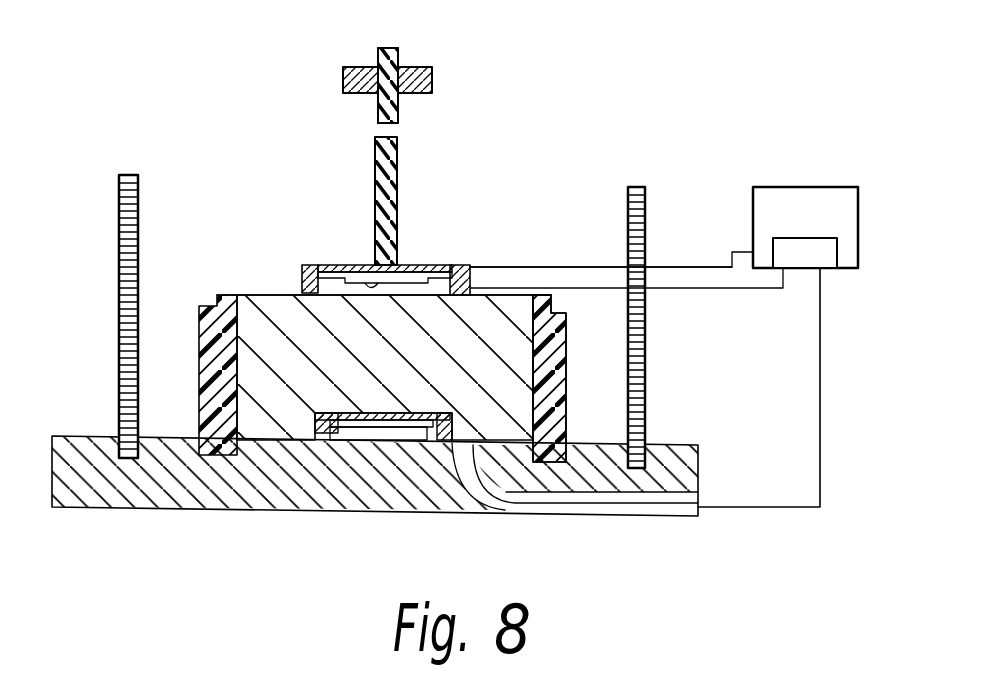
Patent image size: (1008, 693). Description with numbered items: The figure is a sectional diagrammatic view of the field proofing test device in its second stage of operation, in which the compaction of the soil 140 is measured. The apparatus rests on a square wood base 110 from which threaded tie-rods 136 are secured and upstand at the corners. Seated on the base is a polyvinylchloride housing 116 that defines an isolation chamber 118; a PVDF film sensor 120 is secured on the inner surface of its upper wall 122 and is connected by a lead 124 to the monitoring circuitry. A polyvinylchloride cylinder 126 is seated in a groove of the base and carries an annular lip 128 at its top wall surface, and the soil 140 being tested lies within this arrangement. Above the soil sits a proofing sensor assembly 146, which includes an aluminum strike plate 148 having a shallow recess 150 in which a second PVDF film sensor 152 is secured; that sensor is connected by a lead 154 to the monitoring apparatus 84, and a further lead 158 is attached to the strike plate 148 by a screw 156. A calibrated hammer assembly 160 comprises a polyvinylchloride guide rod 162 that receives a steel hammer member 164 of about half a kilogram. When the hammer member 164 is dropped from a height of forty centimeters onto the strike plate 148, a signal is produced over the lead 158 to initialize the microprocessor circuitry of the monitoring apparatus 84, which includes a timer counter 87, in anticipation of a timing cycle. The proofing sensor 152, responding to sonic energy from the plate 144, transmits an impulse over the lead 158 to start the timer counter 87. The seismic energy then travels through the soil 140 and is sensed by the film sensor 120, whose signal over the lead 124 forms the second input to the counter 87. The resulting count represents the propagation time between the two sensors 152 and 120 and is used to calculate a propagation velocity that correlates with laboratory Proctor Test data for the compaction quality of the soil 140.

The monitoring apparatus 84 is at (780, 187).
The timer counter 87 is at (800, 238).
The wood base 110 is at (70, 435).
The polyvinylchloride housing 116 is at (350, 433).
The isolation chamber 118 is at (395, 433).
The PVDF film sensor 120 is at (375, 430).
The upper wall 122 is at (322, 428).
The lead 124 is at (742, 507).
The polyvinylchloride cylinder 126 is at (205, 375).
The annular lip 128 is at (568, 303).
The threaded tie-rods 136 is at (118, 268).
The soil 140 is at (360, 365).
The plate 144 is at (267, 292).
The proofing sensor assembly 146 is at (422, 261).
The aluminum strike plate 148 is at (407, 265).
The recess 150 is at (320, 264).
The PVDF film sensor 152 is at (352, 265).
The lead 154 is at (742, 292).
The screw 156 is at (467, 265).
The lead 158 is at (573, 267).
The calibrated hammer assembly 160 is at (452, 120).
The polyvinylchloride guide rod 162 is at (376, 166).
The steel hammer member 164 is at (343, 76).